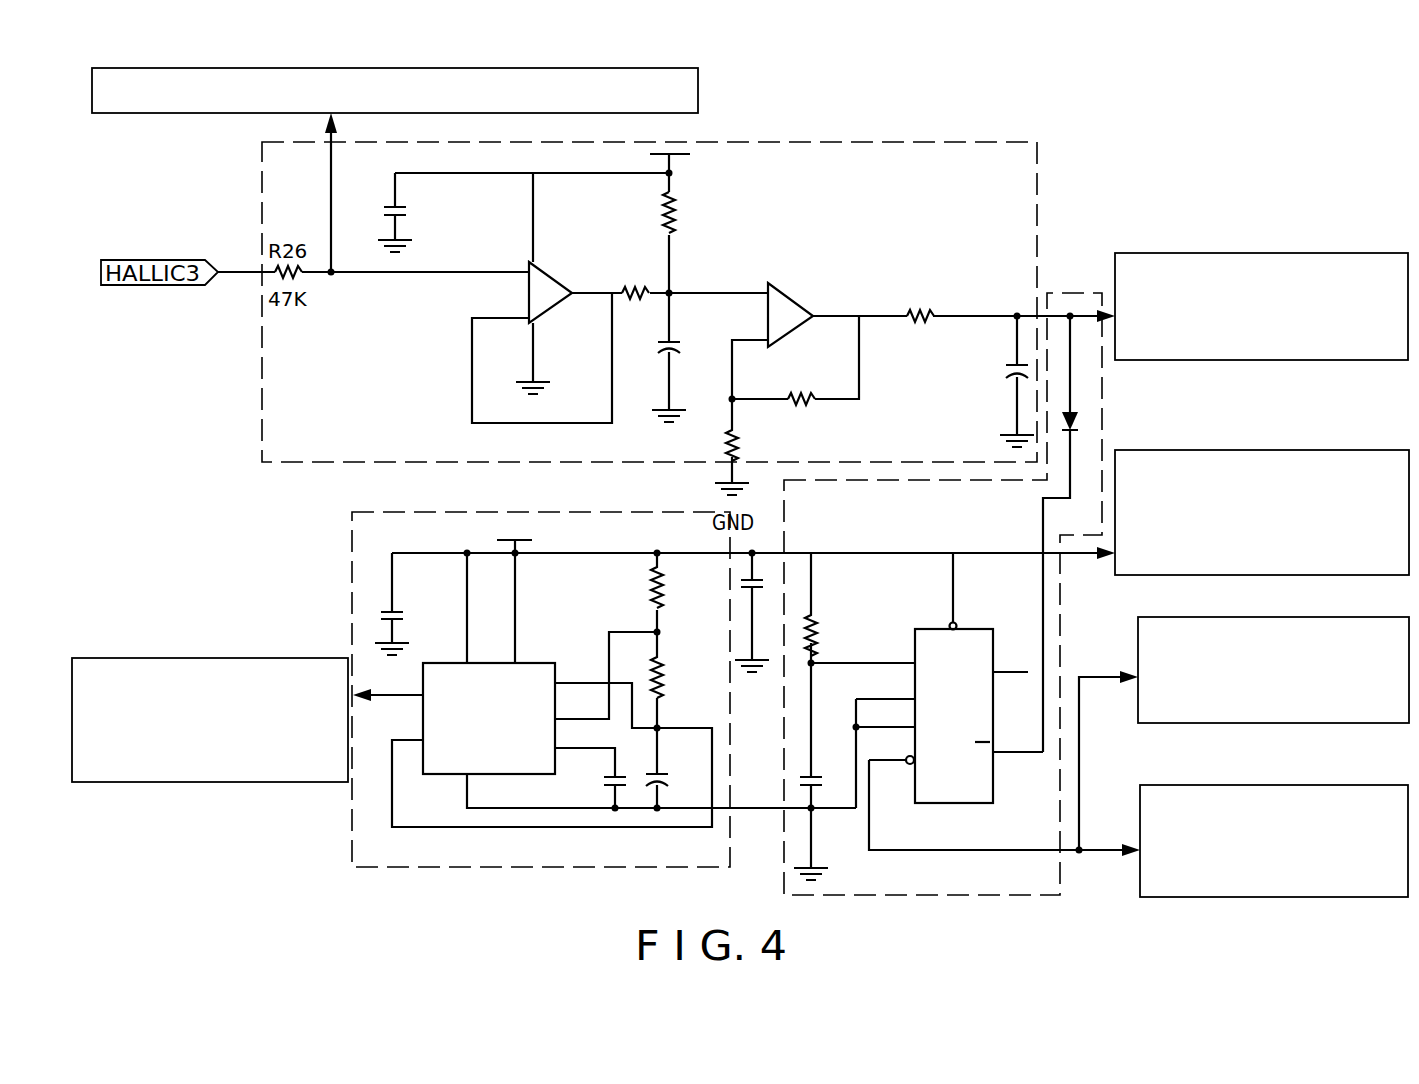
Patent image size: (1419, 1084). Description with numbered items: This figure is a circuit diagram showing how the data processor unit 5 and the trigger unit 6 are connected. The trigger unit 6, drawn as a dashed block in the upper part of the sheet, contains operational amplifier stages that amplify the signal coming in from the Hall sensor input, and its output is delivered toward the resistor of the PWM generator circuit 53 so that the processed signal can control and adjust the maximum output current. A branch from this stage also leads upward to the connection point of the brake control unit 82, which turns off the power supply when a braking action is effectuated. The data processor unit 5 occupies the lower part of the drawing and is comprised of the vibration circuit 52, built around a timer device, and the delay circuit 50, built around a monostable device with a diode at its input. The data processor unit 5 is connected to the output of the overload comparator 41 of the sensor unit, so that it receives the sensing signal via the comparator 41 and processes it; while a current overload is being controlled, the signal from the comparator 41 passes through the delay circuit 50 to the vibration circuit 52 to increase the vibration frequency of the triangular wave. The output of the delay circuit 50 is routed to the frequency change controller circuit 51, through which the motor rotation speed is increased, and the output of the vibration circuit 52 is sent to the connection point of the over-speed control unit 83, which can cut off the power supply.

The brake control unit 82 is at (680, 108).
The trigger unit 6 is at (912, 168).
The PWM generator circuit 53 is at (1270, 258).
The overload comparator 41 is at (1282, 463).
The data processor unit 5 is at (316, 558).
The vibration circuit 52 is at (522, 858).
The delay circuit 50 is at (947, 878).
The over-speed control unit 83 is at (252, 675).
The frequency change controller circuit 51 is at (1305, 798).